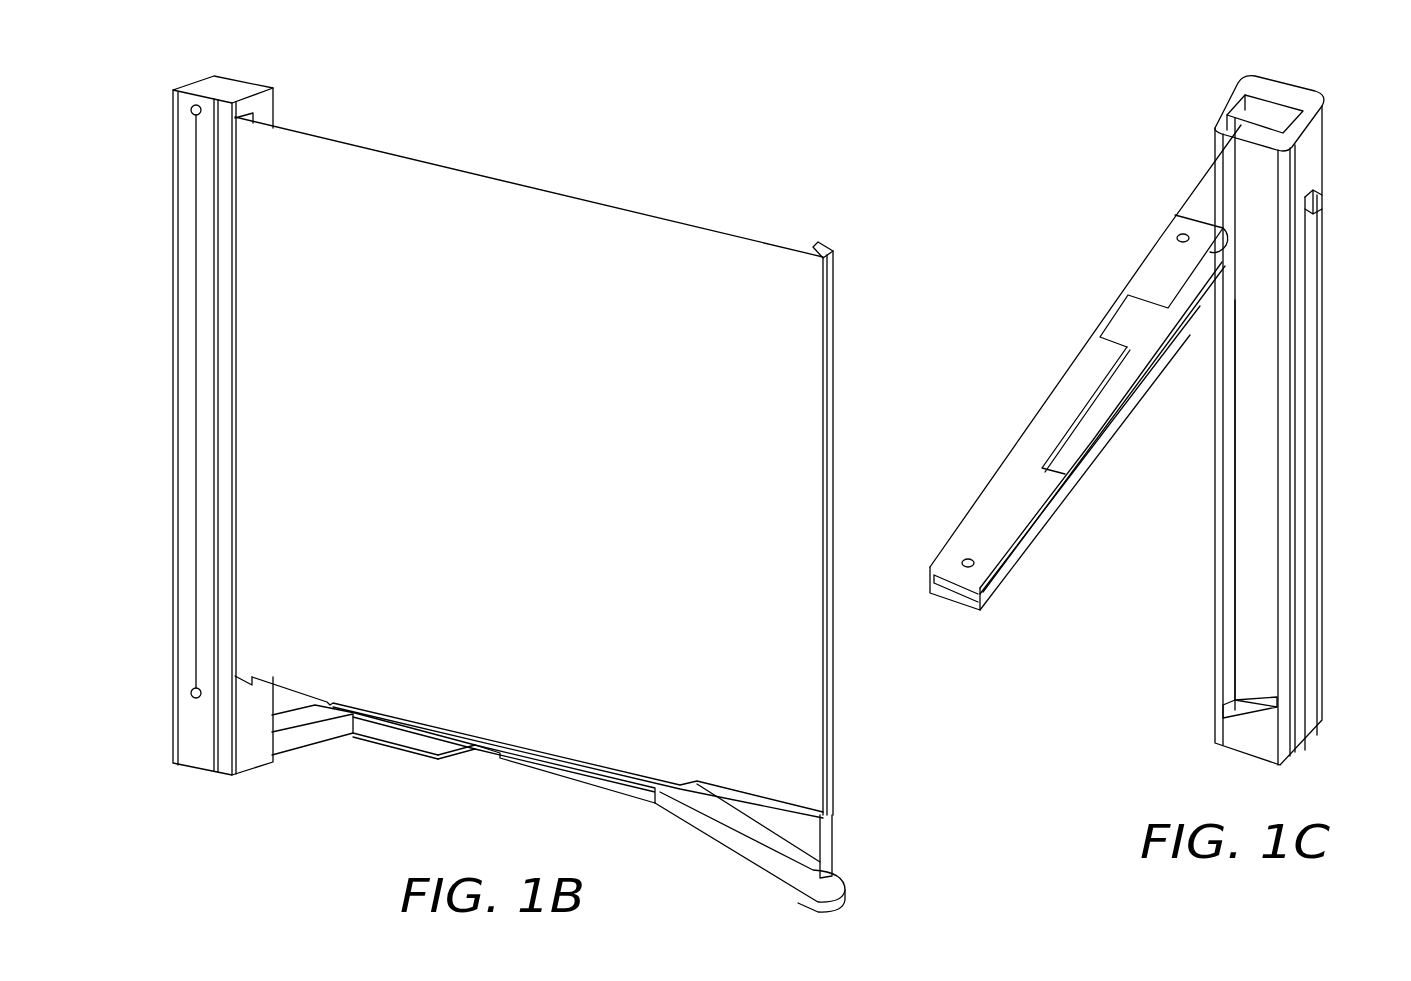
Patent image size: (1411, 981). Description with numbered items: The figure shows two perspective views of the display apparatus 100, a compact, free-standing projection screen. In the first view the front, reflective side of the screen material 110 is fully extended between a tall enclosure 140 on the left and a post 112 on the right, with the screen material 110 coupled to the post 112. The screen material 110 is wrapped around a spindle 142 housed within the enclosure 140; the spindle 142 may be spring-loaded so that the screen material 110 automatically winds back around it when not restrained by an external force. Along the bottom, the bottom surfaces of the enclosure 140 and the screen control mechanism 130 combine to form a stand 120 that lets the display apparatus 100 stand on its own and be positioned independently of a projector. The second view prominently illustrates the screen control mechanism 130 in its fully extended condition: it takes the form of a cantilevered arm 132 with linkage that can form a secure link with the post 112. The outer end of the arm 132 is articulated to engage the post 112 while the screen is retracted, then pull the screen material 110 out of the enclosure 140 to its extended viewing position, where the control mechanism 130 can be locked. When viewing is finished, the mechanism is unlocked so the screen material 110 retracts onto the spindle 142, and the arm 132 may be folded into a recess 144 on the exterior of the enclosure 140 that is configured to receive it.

In FIG. 1B, the display apparatus 100 is at (519, 139).
In FIG. 1B, the reflective screen material 110 is at (500, 473).
In FIG. 1B, the post 112 is at (823, 838).
In FIG. 1B, the stand 120 is at (383, 769).
In FIG. 1C, the screen control mechanism 130 is at (1082, 286).
In FIG. 1C, the cantilevered arm 132 is at (975, 530).
In FIG. 1B, the enclosure 140 is at (220, 90).
In FIG. 1C, the enclosure 140 is at (1296, 100).
In FIG. 1B, the spindle 142 is at (194, 195).
In FIG. 1C, the recess 144 is at (1262, 665).